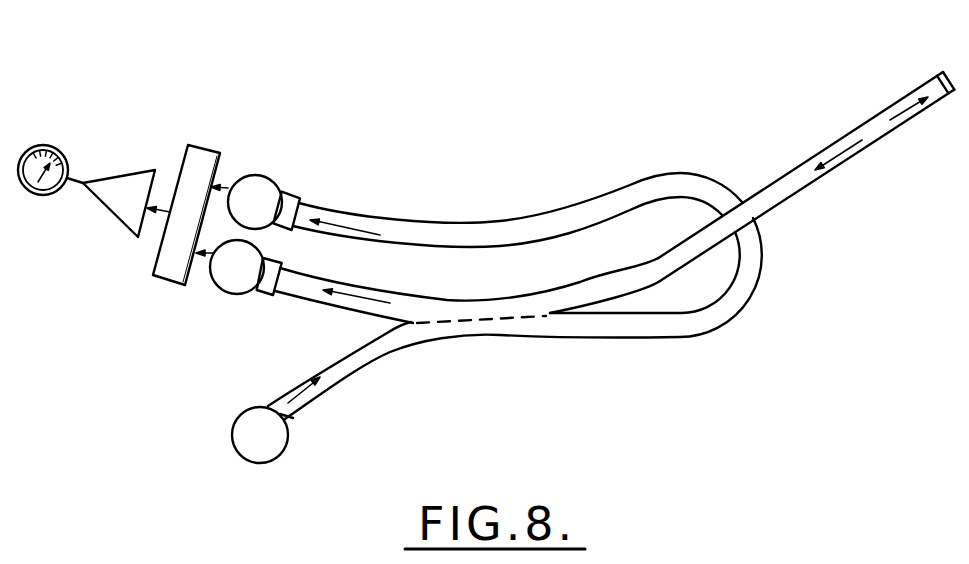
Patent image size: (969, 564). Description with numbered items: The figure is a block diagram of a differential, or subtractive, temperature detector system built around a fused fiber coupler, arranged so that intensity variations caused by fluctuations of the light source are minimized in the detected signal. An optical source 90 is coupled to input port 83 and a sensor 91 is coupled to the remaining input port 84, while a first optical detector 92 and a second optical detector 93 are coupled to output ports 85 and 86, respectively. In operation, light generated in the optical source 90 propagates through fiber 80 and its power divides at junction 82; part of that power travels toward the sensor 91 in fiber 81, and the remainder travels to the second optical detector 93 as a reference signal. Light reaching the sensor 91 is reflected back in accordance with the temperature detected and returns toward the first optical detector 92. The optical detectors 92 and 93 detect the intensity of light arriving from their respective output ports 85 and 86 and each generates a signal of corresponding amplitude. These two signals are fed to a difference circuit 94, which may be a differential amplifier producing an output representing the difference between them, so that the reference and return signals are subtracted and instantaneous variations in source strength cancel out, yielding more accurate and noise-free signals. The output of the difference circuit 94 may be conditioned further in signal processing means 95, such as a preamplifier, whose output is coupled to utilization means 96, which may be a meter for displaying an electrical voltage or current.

The fiber 80 is at (447, 222).
The fiber 81 is at (614, 178).
The junction 82 is at (499, 321).
The input port 83 is at (298, 417).
The input port 84 is at (912, 91).
The output port 85 is at (279, 258).
The output port 86 is at (294, 192).
The optical source 90 is at (242, 412).
The sensor 91 is at (944, 68).
The first optical detector 92 is at (228, 293).
The second optical detector 93 is at (263, 174).
The difference circuit 94 is at (187, 146).
The signal processing means 95 is at (115, 216).
The utilization means 96 is at (50, 146).